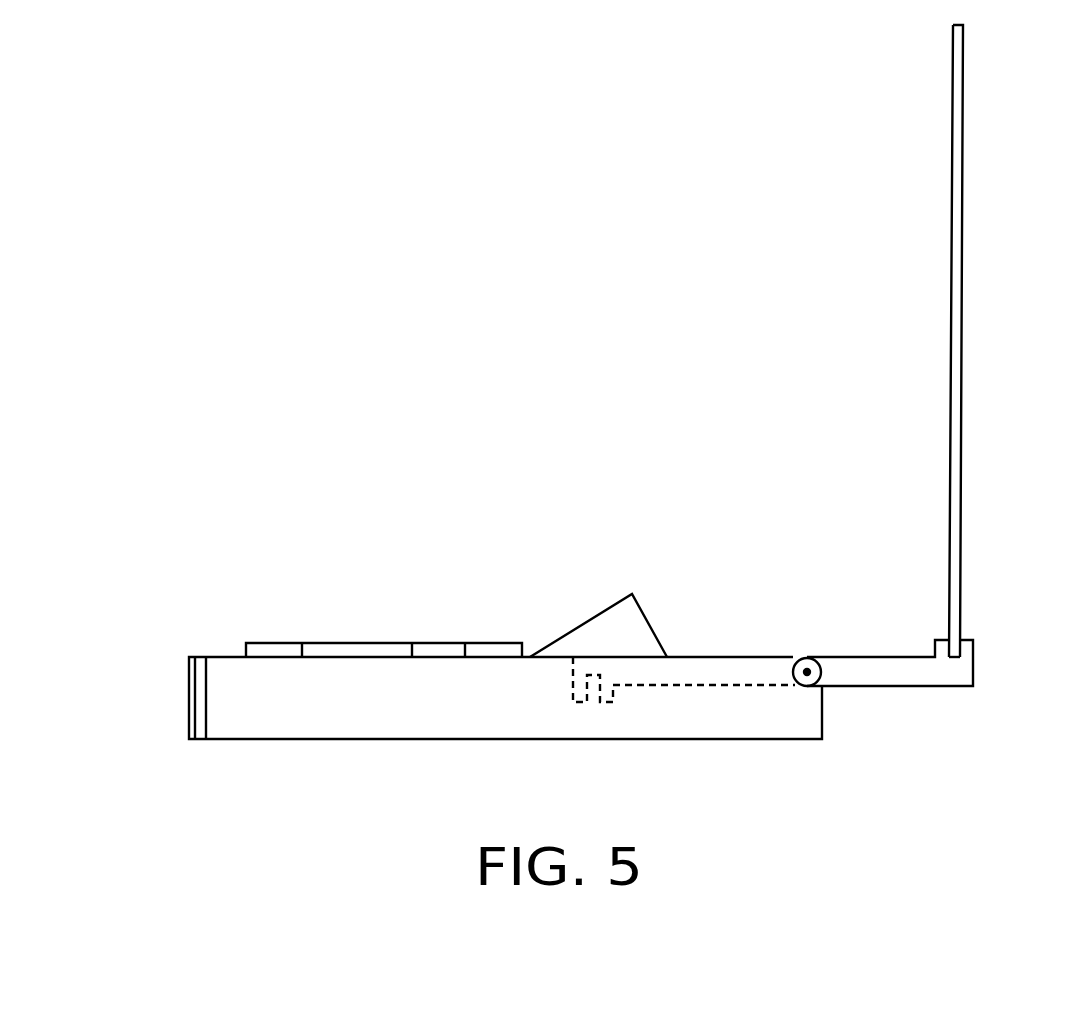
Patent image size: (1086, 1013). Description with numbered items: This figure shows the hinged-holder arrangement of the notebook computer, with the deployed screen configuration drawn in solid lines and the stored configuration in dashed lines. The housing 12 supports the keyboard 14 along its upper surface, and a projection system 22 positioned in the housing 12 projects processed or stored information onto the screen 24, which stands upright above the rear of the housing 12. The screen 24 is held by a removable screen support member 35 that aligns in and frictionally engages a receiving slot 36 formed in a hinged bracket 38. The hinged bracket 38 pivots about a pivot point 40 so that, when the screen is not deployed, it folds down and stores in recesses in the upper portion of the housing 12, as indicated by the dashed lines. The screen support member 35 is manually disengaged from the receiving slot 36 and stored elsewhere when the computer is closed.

The housing 12 is at (226, 690).
The keyboard 14 is at (290, 643).
The projection system 22 is at (610, 632).
The screen 24 is at (924, 341).
The removable screen support member 35 is at (957, 133).
The receiving slot 36 is at (957, 655).
The hinged bracket 38 is at (890, 675).
The pivot point 40 is at (807, 672).